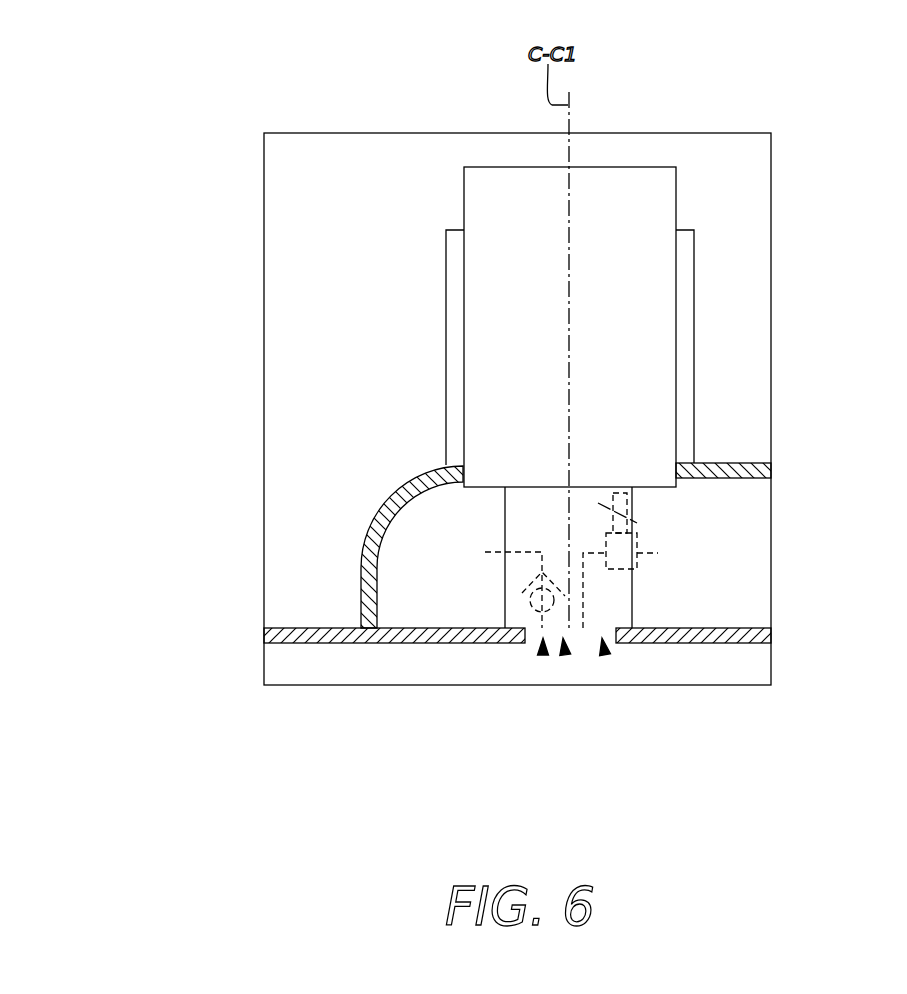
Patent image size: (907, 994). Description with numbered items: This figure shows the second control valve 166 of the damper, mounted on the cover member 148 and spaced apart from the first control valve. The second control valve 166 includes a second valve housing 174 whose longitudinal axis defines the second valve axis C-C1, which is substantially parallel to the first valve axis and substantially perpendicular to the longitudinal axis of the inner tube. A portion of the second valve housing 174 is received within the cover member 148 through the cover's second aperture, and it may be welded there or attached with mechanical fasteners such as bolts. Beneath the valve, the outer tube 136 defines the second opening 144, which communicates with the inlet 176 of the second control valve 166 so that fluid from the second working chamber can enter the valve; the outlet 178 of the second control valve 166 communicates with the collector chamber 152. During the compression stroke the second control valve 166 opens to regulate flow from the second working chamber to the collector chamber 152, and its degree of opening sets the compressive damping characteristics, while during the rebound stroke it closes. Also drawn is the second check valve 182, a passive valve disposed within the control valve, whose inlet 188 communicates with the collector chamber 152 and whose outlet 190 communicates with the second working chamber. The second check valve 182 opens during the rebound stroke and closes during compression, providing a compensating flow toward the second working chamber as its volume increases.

The outer tube 136 is at (270, 637).
The second opening 144 is at (565, 654).
The cover member 148 is at (385, 508).
The collector chamber 152 is at (445, 557).
The second control valve 166 is at (392, 268).
The second valve housing 174 is at (496, 200).
The inlet 176 is at (604, 654).
The outlet 178 is at (676, 555).
The second check valve 182 is at (508, 586).
The inlet 188 is at (543, 654).
The outlet 190 is at (472, 537).